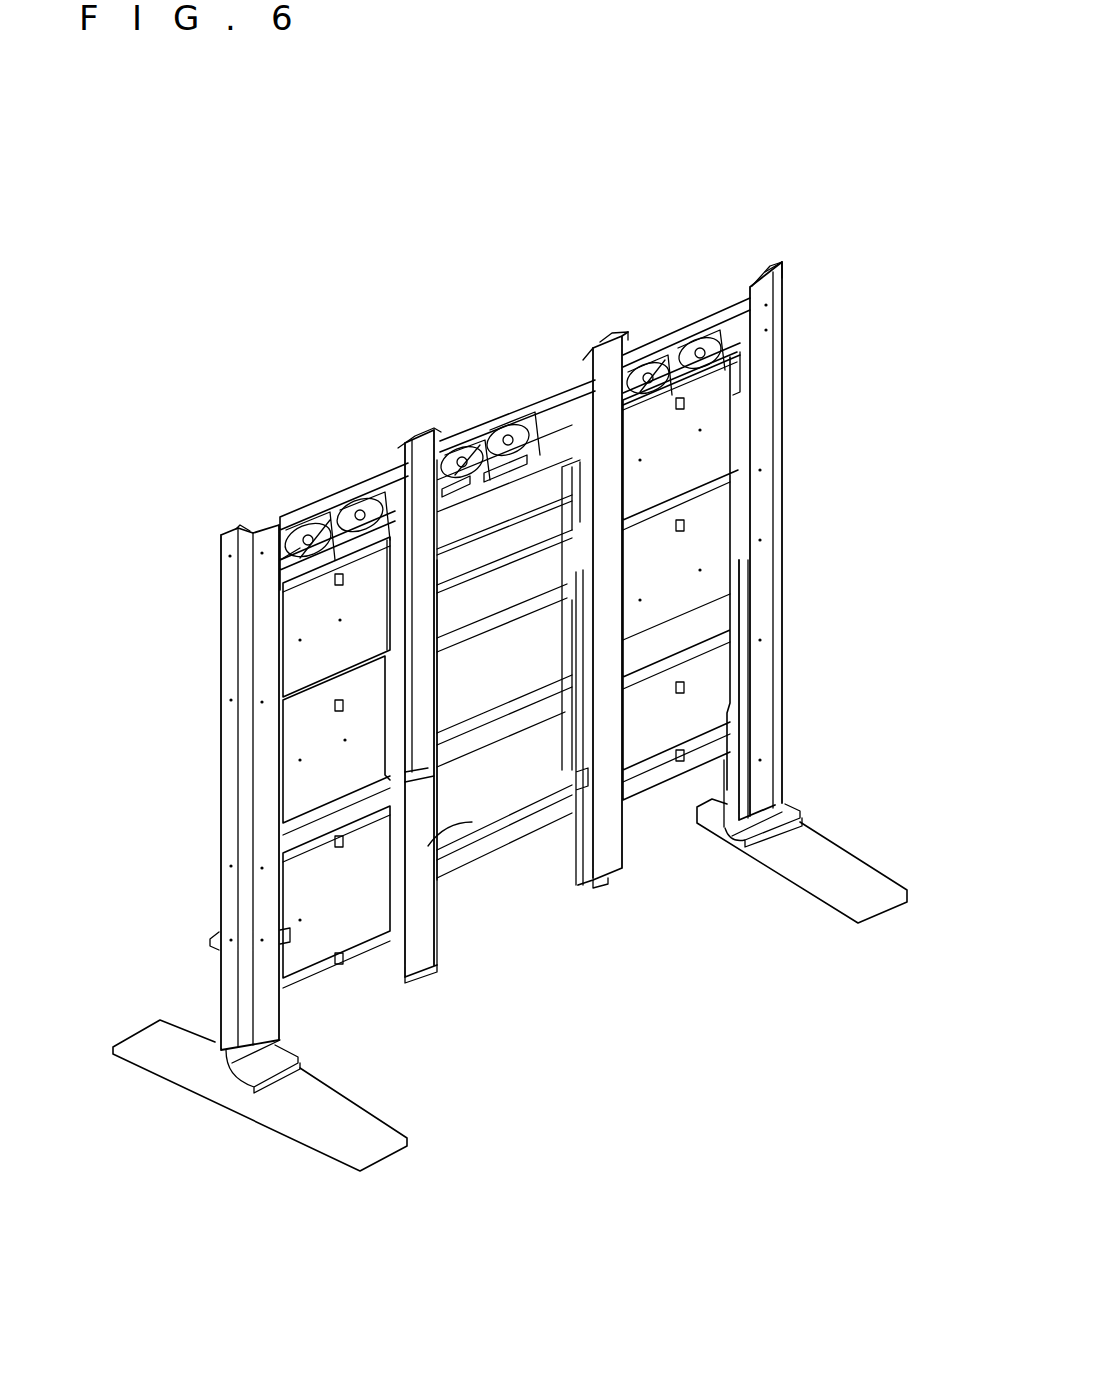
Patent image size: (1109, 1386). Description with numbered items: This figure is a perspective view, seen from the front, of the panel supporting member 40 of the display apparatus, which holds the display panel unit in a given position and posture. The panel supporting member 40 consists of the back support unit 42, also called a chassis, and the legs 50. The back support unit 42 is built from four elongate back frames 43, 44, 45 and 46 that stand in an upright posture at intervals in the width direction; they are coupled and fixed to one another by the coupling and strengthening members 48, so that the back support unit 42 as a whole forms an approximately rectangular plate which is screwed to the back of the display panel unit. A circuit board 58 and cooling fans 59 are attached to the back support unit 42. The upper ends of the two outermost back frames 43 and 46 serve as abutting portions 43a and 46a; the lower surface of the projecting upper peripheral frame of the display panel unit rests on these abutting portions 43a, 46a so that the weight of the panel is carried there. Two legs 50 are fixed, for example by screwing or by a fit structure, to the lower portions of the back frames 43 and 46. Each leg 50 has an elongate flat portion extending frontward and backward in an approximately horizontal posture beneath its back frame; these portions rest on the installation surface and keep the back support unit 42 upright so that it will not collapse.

The panel supporting member 40 is at (836, 345).
The back support unit 42 is at (765, 563).
The back frame 43 is at (228, 665).
The abutting portion 43a is at (250, 533).
The back frame 44 is at (502, 803).
The back frame 45 is at (610, 832).
The back frame 46 is at (766, 654).
The abutting portion 46a is at (757, 283).
The coupling and strengthening member 48 is at (345, 973).
The leg 50 is at (343, 1113).
The circuit board 58 is at (510, 805).
The cooling fan 59 is at (322, 530).